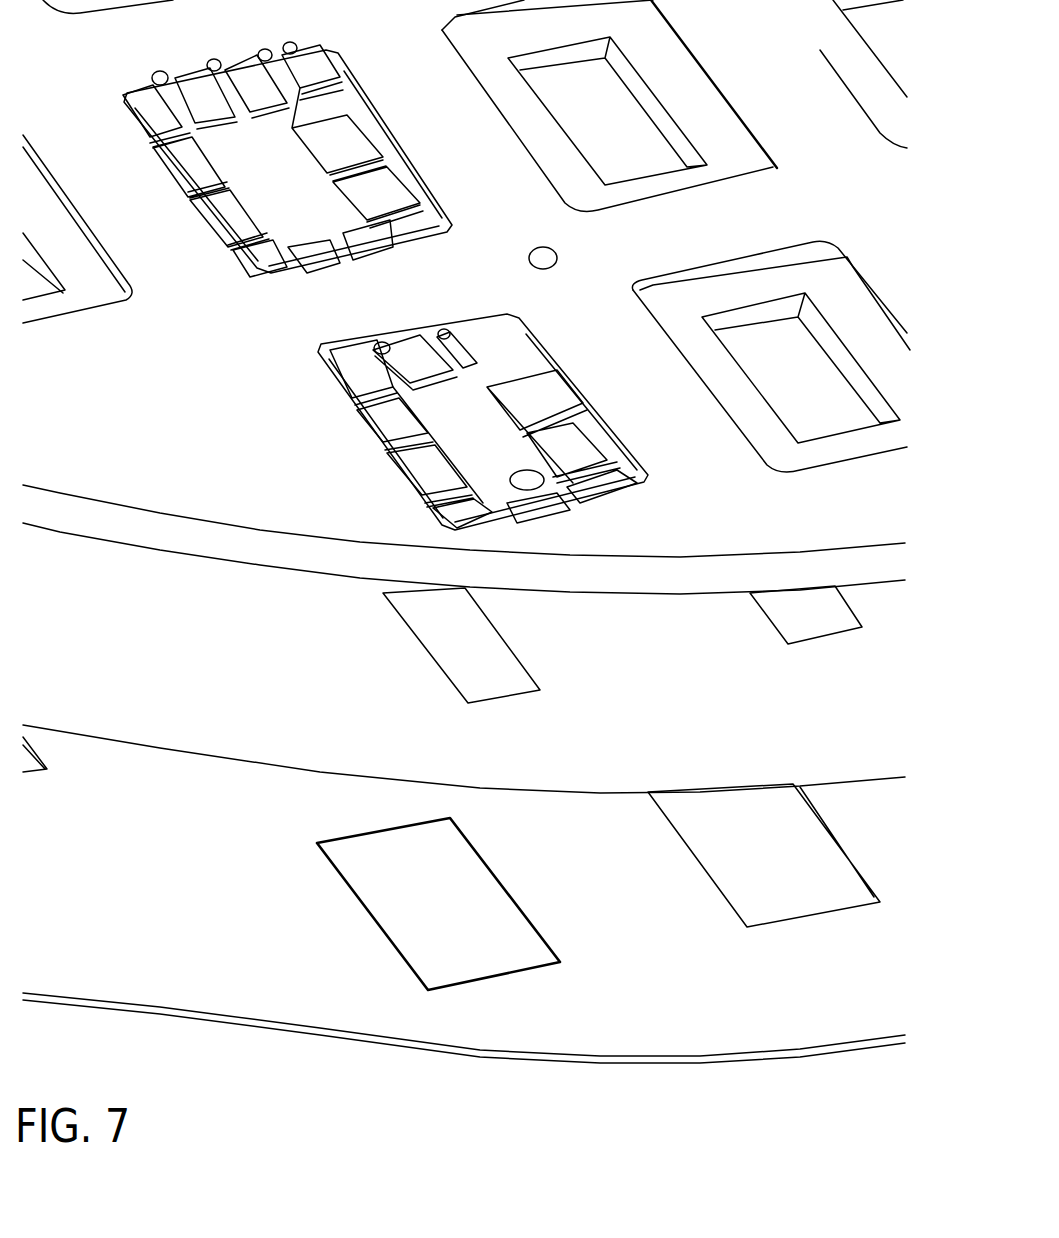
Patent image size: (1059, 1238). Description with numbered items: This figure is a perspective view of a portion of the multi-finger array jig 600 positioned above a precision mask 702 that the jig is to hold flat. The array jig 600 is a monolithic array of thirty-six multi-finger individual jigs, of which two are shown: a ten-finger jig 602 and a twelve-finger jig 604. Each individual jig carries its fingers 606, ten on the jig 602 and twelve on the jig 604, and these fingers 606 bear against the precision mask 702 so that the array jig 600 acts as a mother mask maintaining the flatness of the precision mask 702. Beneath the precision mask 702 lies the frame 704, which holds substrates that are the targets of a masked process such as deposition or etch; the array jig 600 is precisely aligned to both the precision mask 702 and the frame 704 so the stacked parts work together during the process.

The multi-finger array jig 600 is at (422, 32).
The 10-finger jig 602 is at (338, 467).
The 12-finger jig 604 is at (258, 302).
The fingers 606 is at (497, 333).
The precision mask 702 is at (338, 664).
The frame 704 is at (464, 894).